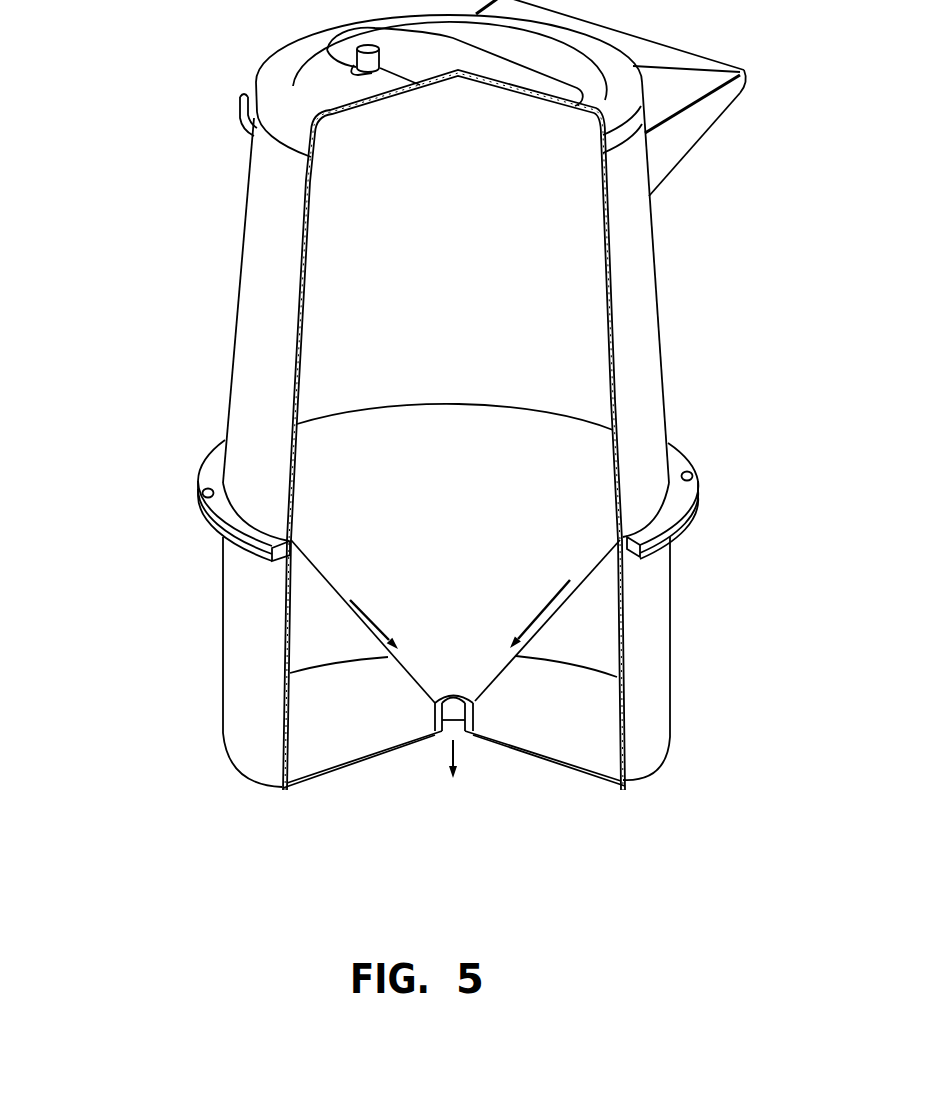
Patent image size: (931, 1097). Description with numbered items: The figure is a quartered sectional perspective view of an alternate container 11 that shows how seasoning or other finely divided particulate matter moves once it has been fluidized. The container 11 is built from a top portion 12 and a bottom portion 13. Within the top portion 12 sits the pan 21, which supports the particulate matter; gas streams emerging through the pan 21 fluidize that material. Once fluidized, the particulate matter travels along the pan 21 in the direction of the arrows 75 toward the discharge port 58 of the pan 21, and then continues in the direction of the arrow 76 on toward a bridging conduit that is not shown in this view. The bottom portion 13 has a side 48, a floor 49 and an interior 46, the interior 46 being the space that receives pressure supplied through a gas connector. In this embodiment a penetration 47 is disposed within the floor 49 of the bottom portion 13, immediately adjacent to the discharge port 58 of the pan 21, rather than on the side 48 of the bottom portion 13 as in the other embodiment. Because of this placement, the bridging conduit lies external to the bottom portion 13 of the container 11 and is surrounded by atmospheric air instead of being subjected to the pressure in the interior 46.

The container 11 is at (90, 403).
The top portion 12 is at (615, 348).
The bottom portion 13 is at (673, 647).
The pan 21 is at (587, 580).
The interior 46 is at (326, 713).
The penetration 47 is at (512, 707).
The side 48 is at (673, 713).
The floor 49 is at (329, 740).
The discharge port 58 is at (450, 652).
The arrows 75 is at (383, 600).
The arrow 76 is at (460, 757).